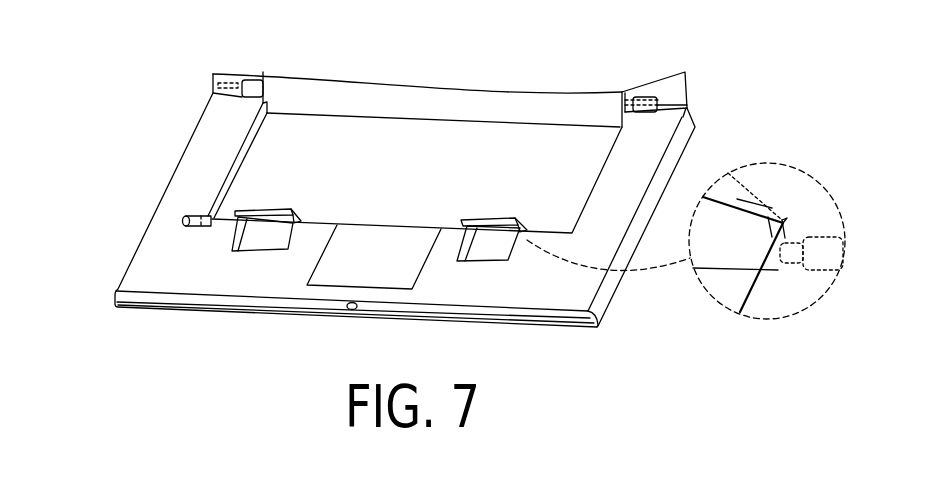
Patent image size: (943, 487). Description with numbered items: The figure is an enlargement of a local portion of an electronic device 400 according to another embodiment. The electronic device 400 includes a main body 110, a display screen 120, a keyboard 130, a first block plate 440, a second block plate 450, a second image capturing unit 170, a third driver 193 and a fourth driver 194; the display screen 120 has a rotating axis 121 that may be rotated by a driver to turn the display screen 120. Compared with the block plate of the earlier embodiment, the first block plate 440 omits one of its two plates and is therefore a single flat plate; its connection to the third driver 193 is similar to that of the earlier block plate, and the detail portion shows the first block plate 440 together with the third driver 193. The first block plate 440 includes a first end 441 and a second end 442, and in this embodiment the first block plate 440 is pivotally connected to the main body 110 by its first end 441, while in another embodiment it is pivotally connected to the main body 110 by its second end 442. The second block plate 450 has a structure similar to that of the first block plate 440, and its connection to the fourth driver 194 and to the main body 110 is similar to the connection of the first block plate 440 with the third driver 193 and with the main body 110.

The electronic device 400 is at (130, 57).
The main body 110 is at (683, 138).
The display screen 120 is at (690, 98).
The rotating axis 121 is at (668, 98).
The keyboard 130 is at (570, 111).
The second image capturing unit 170 is at (350, 310).
The third driver 193 is at (830, 237).
The fourth driver 194 is at (183, 219).
The first block plate 440 is at (493, 230).
The first end 441 is at (737, 205).
The second end 442 is at (488, 219).
The second block plate 450 is at (265, 216).